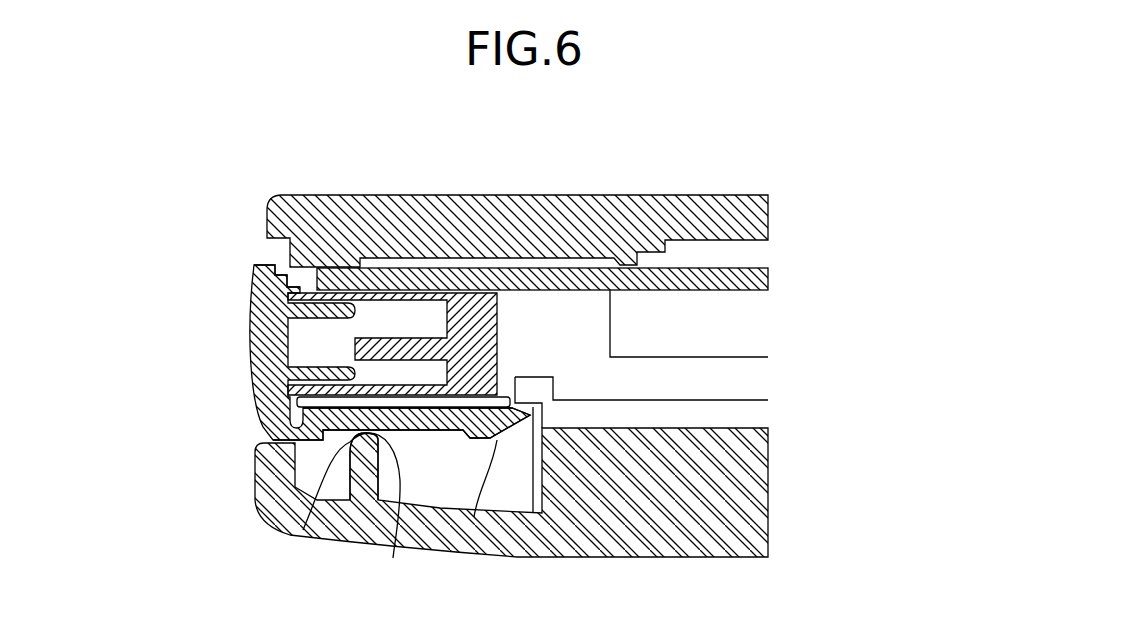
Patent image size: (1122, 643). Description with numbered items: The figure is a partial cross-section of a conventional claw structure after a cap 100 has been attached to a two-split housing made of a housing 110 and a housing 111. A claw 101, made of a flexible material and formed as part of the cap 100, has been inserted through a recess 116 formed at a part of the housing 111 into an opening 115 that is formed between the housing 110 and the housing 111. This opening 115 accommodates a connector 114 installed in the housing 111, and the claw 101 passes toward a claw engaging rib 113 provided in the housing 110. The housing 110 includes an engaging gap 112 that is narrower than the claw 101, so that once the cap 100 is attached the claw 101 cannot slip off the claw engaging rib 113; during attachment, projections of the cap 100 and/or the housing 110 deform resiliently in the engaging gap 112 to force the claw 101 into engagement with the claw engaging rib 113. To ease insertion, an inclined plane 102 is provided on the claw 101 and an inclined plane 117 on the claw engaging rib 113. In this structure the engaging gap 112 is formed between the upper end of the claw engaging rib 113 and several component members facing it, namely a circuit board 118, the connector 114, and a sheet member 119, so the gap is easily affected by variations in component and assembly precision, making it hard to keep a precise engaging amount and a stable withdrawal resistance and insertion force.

The cap 100 is at (248, 327).
The claw 101 is at (474, 517).
The inclined plane 102 is at (510, 427).
The housing 110 is at (608, 537).
The housing 111 is at (592, 212).
The engaging gap 112 is at (393, 558).
The claw engaging rib 113 is at (365, 483).
The connector 114 is at (470, 305).
The opening 115 is at (278, 262).
The recess 116 is at (258, 423).
The inclined plane 117 is at (303, 530).
The circuit board 118 is at (672, 280).
The sheet member 119 is at (500, 397).